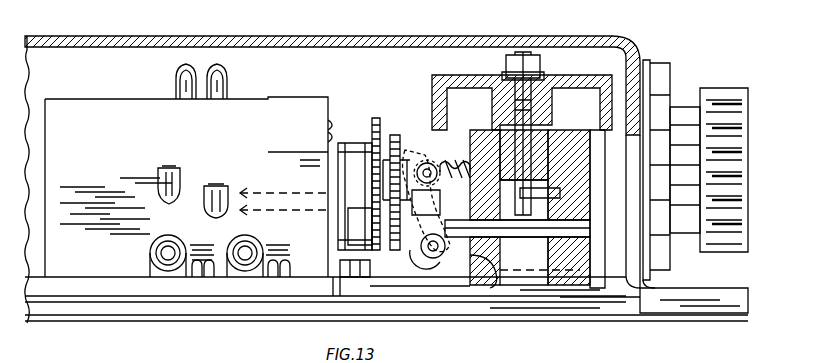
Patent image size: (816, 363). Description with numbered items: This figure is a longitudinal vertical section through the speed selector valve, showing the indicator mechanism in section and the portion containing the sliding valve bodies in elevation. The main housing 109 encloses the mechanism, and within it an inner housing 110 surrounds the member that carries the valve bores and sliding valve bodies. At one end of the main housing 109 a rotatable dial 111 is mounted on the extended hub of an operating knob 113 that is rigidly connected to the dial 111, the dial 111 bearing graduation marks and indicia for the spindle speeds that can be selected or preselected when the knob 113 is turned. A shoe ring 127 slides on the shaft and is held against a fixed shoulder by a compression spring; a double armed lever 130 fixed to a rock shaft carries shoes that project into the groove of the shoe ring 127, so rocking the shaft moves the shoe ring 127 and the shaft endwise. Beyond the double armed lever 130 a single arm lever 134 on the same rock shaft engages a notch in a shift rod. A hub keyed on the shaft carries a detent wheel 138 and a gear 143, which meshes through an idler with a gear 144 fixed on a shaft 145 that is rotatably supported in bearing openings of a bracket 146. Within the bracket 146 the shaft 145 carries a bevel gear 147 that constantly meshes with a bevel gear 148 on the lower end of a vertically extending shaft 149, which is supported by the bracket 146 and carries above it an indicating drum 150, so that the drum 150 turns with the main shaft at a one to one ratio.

The main housing 109 is at (388, 36).
The inner housing 110 is at (245, 99).
The rotatable dial 111 is at (670, 90).
The operating knob 113 is at (733, 88).
The shoe ring 127 is at (440, 163).
The double armed lever 130 is at (420, 162).
The single arm lever 134 is at (428, 270).
The detent wheel 138 is at (375, 125).
The gear 143 is at (395, 135).
The gear 144 is at (392, 270).
The shaft 145 is at (525, 238).
The bracket 146 is at (592, 180).
The bevel gear 147 is at (500, 270).
The bevel gear 148 is at (560, 193).
The vertically extending shaft 149 is at (535, 150).
The indicating drum 150 is at (614, 75).